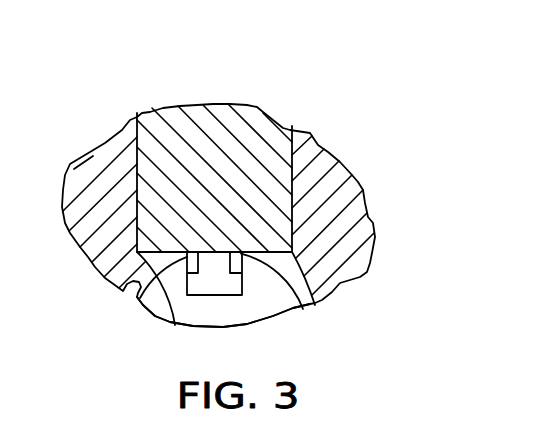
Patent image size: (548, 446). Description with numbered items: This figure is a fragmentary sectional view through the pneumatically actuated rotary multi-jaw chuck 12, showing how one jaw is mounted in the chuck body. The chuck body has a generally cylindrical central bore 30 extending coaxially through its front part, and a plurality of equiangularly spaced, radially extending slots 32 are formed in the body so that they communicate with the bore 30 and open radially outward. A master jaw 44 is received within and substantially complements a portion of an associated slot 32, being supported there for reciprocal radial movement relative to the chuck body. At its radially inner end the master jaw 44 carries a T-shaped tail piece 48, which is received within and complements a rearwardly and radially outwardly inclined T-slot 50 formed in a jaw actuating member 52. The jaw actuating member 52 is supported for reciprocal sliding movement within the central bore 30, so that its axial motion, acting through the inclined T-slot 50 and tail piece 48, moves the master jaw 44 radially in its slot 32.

The rotary multi-jaw chuck 12 is at (239, 73).
The central bore 30 is at (125, 302).
The radially extending slot 32 is at (283, 147).
The master jaw 44 is at (178, 128).
The T-shaped tail piece 48 is at (223, 290).
The T-slot 50 is at (152, 312).
The jaw actuating member 52 is at (266, 304).